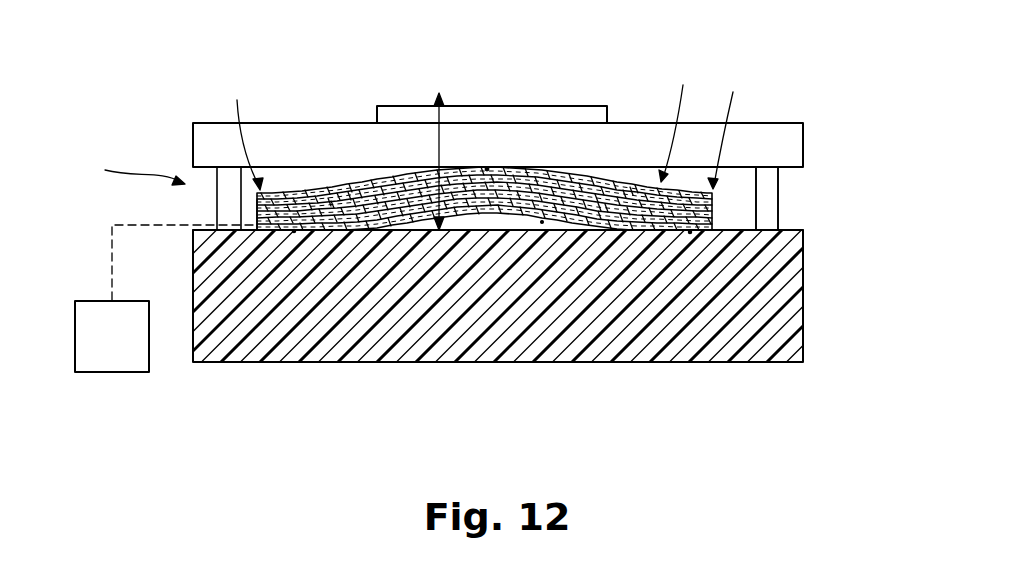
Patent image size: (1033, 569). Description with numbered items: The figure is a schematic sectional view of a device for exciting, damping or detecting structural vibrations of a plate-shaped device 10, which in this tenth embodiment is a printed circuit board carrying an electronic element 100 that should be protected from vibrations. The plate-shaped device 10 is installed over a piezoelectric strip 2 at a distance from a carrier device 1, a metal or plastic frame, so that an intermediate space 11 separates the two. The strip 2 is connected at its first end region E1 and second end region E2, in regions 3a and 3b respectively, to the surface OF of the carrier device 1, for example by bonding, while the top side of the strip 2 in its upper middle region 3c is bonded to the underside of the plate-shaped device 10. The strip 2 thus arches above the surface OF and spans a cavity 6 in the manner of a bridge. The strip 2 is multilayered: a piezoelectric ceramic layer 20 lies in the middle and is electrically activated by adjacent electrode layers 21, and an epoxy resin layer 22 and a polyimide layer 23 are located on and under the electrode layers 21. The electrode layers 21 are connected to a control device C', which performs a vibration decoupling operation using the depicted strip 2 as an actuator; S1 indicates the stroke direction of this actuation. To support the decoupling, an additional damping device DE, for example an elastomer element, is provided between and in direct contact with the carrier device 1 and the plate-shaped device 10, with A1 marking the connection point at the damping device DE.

The carrier device 1 is at (693, 345).
The plate-shaped device 10 is at (793, 148).
The electronic element 100 is at (530, 122).
The intermediate space 11 is at (788, 180).
The damping device DE is at (227, 188).
The piezoelectric ceramic layer 20 is at (712, 213).
The electrode layers 21 is at (262, 213).
The epoxy resin layer 22 is at (630, 187).
The polyimide layer 23 is at (348, 192).
The region 3a is at (293, 232).
The region 3b is at (690, 233).
The region 3c is at (487, 169).
The cavity 6 is at (542, 222).
The piezoelectric strip 2 is at (676, 120).
The first end region E1 is at (243, 131).
The second end region E2 is at (729, 127).
The connection point A1 is at (127, 166).
The stroke direction S1 is at (435, 138).
The surface OF is at (794, 222).
The control unit C' is at (166, 346).